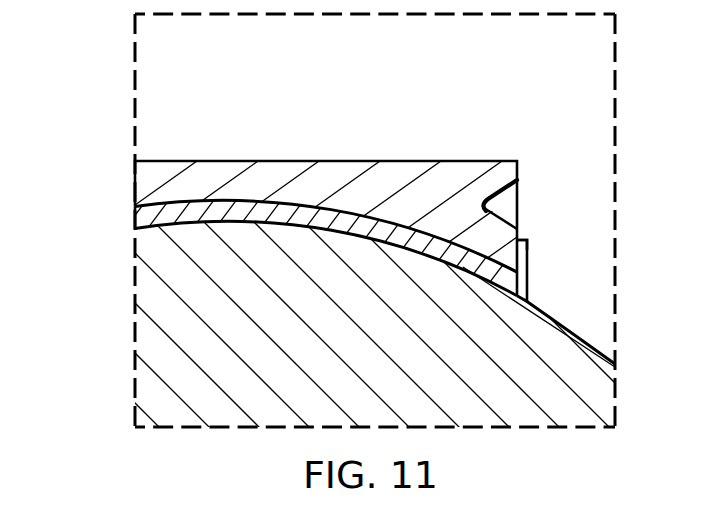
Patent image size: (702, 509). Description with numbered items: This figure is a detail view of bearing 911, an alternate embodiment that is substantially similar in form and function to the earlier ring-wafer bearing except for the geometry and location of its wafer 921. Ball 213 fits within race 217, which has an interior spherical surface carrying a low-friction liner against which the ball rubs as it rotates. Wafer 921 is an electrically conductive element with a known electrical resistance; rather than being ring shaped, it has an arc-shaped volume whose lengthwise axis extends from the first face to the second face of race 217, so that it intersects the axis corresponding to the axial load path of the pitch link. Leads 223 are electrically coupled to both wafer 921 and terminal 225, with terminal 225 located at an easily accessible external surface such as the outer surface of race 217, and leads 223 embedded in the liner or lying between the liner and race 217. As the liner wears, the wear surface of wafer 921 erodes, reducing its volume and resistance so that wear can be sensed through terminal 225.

The bearing 911 is at (500, 103).
The race 217 is at (418, 161).
The wafer 921 is at (344, 222).
The ball 213 is at (172, 310).
The leads 223 is at (530, 290).
The terminal 225 is at (530, 248).